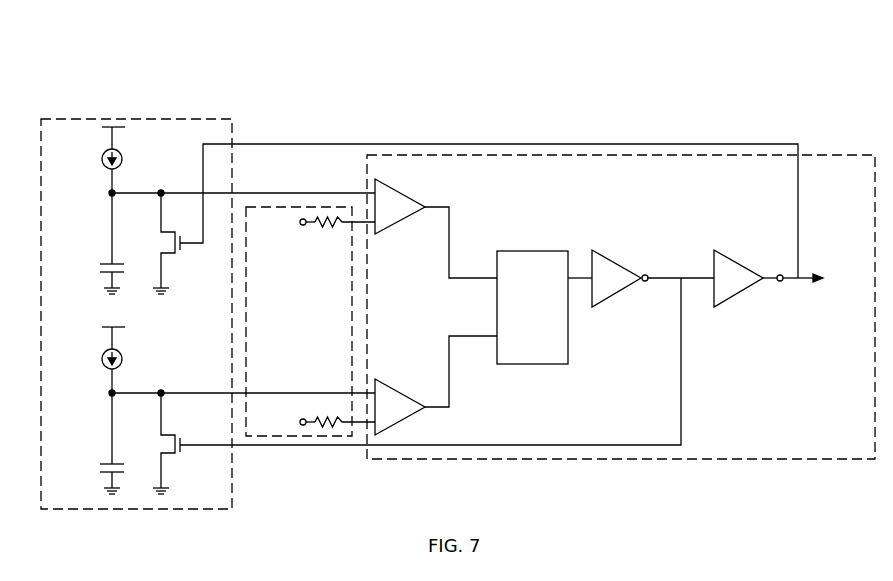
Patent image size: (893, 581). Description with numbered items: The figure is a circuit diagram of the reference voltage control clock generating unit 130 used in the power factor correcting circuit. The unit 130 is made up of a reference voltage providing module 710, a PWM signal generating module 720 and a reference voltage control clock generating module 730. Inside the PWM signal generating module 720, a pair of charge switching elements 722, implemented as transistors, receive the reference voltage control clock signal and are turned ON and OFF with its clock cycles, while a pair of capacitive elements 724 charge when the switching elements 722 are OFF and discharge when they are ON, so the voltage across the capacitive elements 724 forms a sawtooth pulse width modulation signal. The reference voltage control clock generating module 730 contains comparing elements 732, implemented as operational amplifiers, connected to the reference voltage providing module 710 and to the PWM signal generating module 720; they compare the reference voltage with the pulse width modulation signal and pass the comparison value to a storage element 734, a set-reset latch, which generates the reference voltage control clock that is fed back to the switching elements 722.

The reference voltage control clock generating unit 130 is at (476, 45).
The reference voltage providing module 710 is at (300, 437).
The PWM signal generating module 720 is at (139, 118).
The charge switching element 722 is at (179, 267).
The capacitive element 724 is at (100, 273).
The reference voltage control clock generating module 730 is at (845, 155).
The comparing element 732 is at (402, 233).
The storage element 734 is at (531, 251).